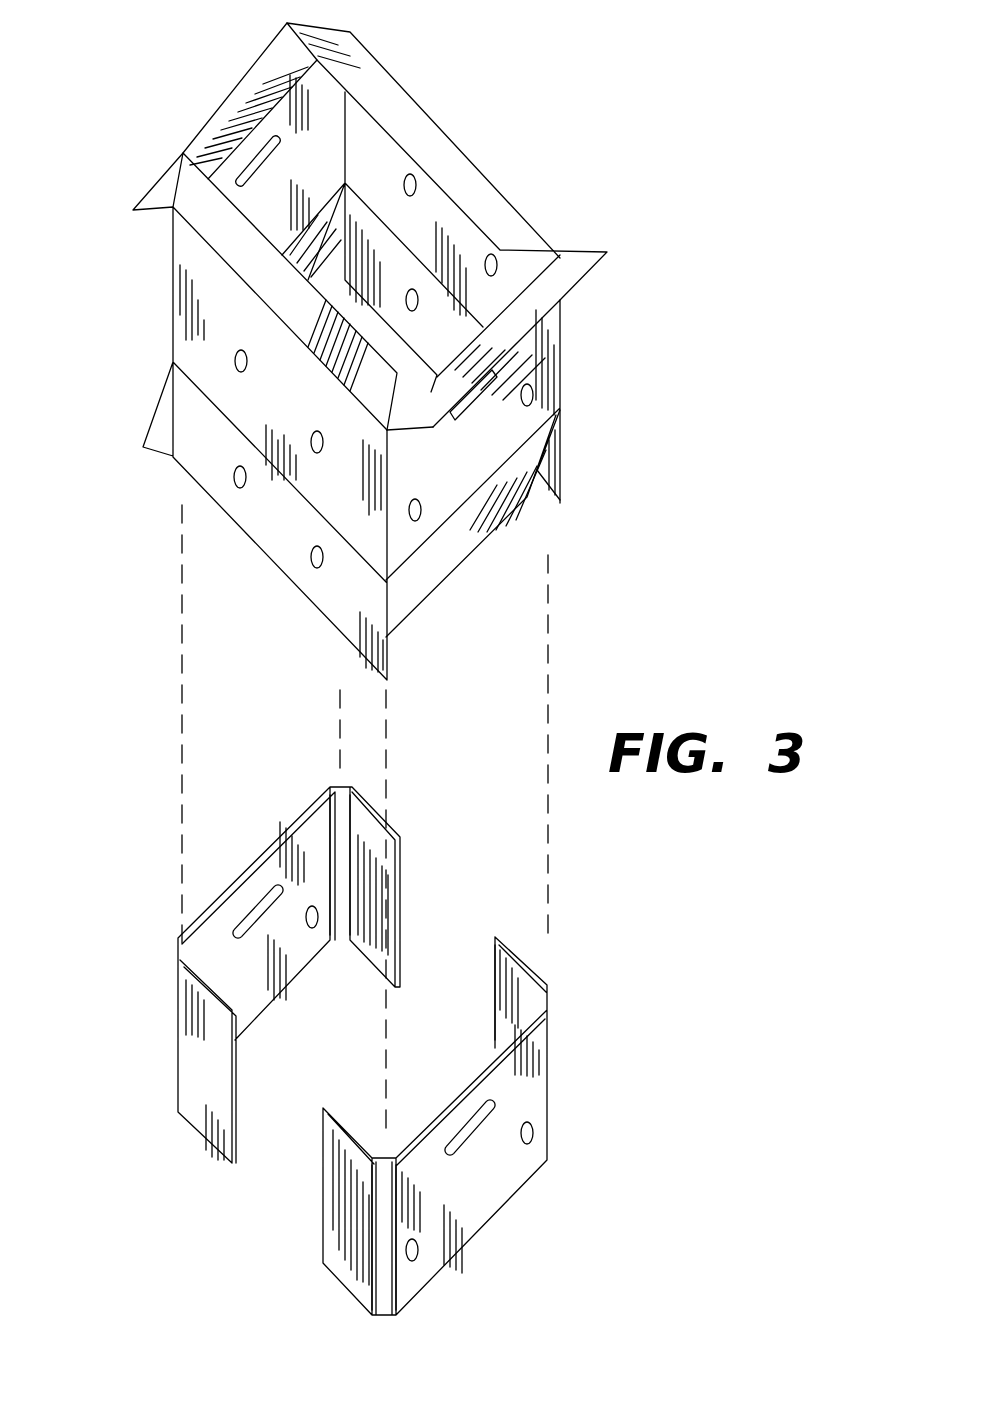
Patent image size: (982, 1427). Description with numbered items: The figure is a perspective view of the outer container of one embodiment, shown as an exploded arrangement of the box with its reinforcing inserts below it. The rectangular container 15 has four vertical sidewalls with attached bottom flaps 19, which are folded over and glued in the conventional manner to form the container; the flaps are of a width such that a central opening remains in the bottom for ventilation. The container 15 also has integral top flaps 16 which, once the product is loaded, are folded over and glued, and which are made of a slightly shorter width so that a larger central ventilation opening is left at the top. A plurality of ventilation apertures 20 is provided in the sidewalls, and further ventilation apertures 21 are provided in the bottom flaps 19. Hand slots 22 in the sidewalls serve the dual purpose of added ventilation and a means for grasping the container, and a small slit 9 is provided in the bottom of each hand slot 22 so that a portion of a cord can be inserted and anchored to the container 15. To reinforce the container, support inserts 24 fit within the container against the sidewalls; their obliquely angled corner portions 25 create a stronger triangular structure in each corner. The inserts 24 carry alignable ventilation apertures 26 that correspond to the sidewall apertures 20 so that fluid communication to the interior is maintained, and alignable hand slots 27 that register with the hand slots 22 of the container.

The slit 9 is at (472, 403).
The container 15 is at (545, 360).
The top flaps 16 is at (253, 101).
The bottom flaps 19 is at (270, 548).
The ventilation apertures 20 is at (227, 358).
The ventilation apertures 21 is at (417, 303).
The hand slots 22 is at (285, 168).
The support inserts 24 is at (200, 1053).
The corner portions 25 is at (342, 813).
The ventilation apertures 26 is at (533, 1133).
The hand slots 27 is at (490, 1127).